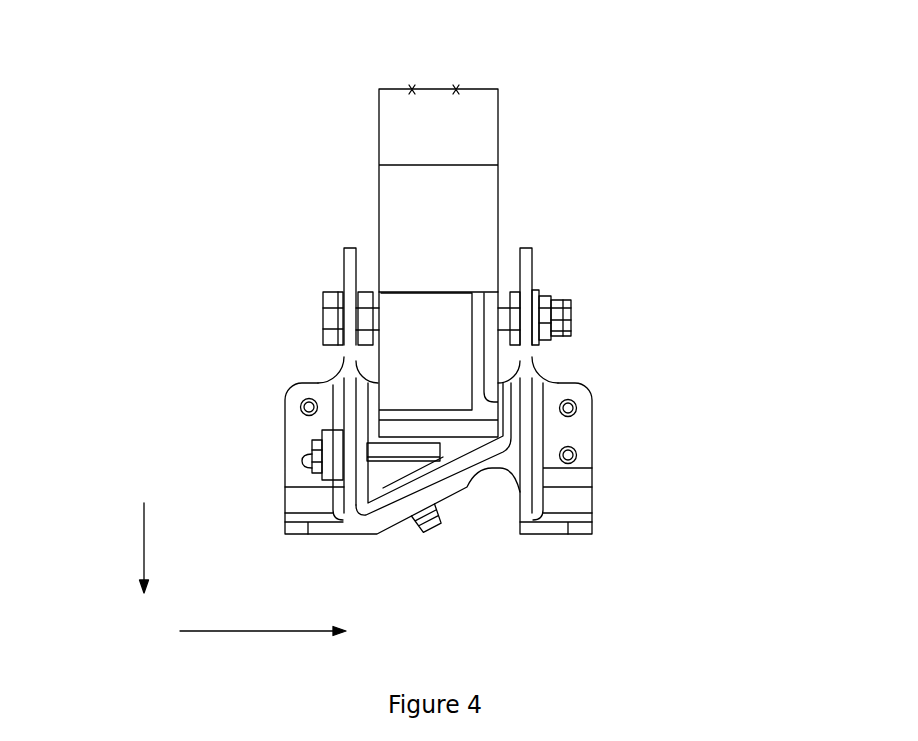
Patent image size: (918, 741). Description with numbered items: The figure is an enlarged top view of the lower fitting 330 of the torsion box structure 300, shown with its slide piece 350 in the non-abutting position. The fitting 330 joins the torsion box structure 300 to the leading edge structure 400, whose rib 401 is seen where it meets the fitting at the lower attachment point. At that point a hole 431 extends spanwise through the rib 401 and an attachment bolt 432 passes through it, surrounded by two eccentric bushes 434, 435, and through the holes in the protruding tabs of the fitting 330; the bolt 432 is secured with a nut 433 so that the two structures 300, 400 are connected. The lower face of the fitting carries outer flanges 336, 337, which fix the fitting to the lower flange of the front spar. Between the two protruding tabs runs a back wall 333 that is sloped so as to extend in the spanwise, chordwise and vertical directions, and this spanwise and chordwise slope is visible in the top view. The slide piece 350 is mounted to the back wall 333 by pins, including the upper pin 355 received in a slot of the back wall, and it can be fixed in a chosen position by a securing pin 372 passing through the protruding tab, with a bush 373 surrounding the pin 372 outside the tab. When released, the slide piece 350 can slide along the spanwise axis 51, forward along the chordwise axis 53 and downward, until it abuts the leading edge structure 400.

The leading edge structure 400 is at (305, 112).
The rib 401 is at (477, 157).
The hole 431 is at (428, 298).
The attachment bolt 432 is at (577, 302).
The nut 433 is at (323, 313).
The eccentric bush 434 is at (502, 318).
The eccentric bush 435 is at (358, 288).
The torsion box structure 300 is at (612, 534).
The lower fitting 330 is at (636, 372).
The back wall 333 is at (460, 478).
The outer flange 336 is at (577, 427).
The outer flange 337 is at (295, 430).
The slide piece 350 is at (383, 477).
The upper pin 355 is at (430, 527).
The securing pin 372 is at (352, 452).
The bush 373 is at (335, 462).
The chordwise aerofoil axis 53 is at (143, 550).
The first aerofoil axis 51 is at (237, 631).